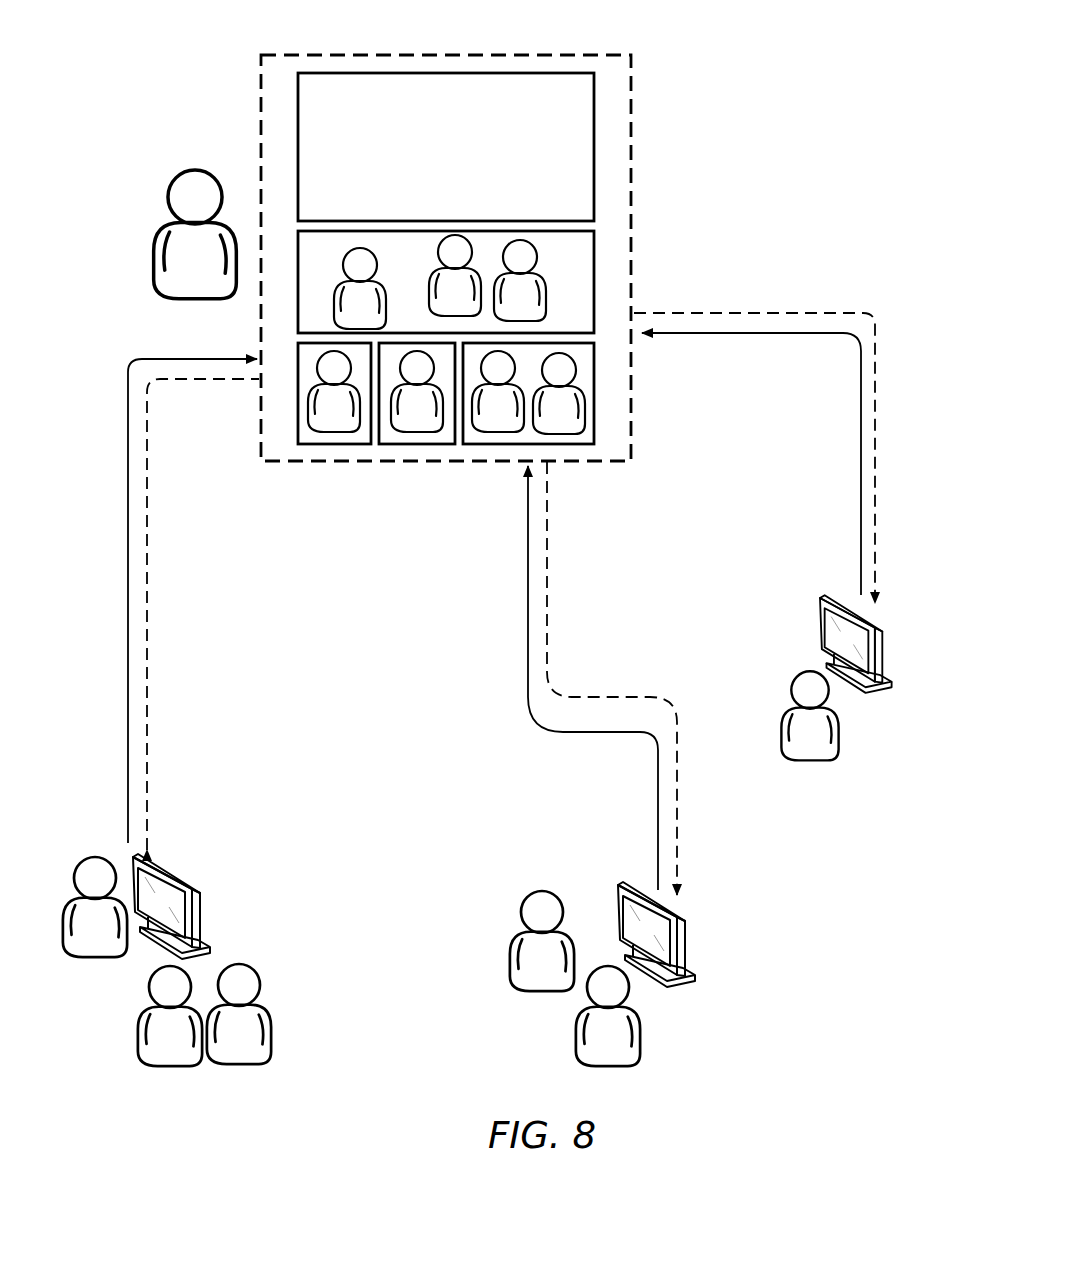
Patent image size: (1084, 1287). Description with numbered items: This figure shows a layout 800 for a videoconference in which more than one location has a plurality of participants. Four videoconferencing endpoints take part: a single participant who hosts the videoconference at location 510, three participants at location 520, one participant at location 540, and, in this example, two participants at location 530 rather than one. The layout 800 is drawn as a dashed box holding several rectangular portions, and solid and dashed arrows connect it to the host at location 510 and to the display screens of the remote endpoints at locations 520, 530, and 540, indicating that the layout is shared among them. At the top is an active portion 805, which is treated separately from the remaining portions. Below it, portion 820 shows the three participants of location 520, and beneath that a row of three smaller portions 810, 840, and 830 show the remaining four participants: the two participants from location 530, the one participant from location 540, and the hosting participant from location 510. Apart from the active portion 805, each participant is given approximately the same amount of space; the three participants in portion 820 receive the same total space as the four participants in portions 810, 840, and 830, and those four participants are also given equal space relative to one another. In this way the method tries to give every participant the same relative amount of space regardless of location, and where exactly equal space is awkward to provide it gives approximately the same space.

The layout 800 is at (604, 71).
The active portion 805 is at (612, 202).
The portion 820 is at (612, 335).
The portion 810 is at (343, 453).
The portion 840 is at (417, 450).
The portion 830 is at (560, 455).
The location 510 is at (185, 312).
The location 520 is at (207, 1075).
The location 530 is at (673, 1020).
The location 540 is at (838, 767).